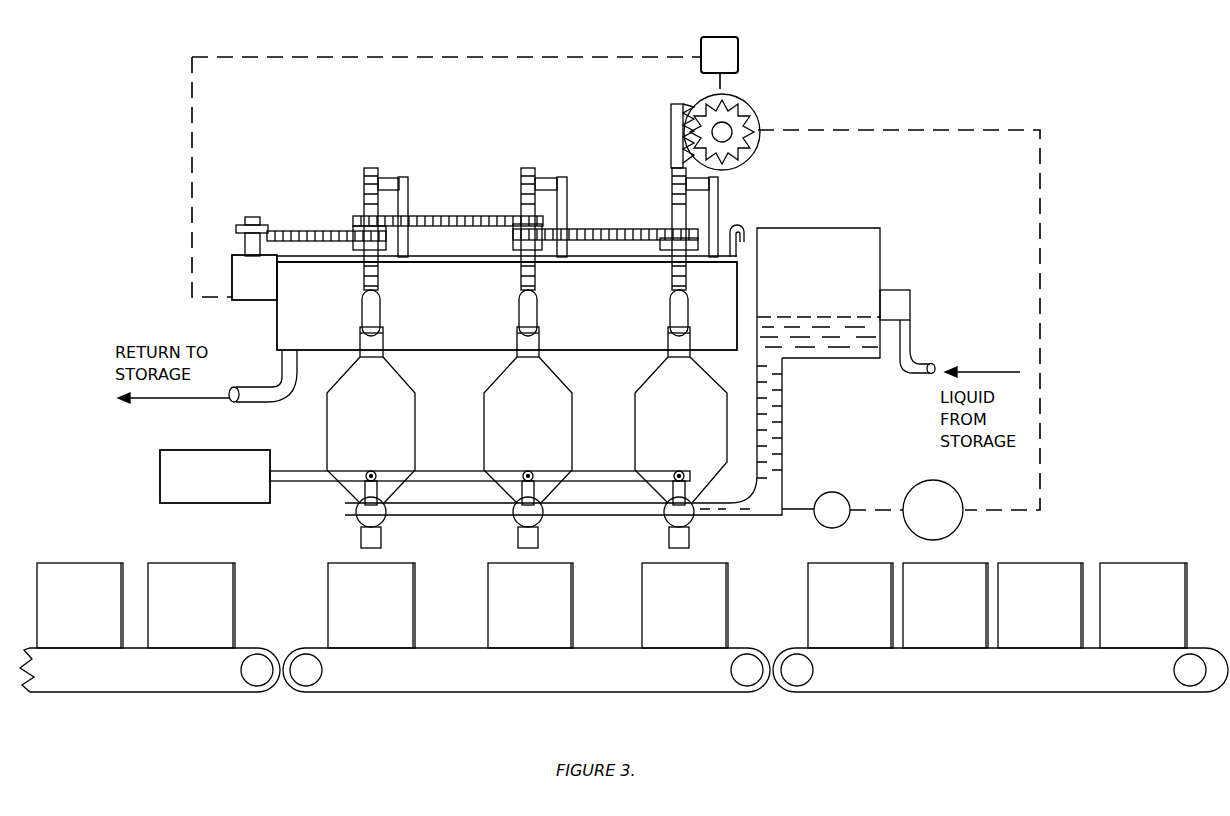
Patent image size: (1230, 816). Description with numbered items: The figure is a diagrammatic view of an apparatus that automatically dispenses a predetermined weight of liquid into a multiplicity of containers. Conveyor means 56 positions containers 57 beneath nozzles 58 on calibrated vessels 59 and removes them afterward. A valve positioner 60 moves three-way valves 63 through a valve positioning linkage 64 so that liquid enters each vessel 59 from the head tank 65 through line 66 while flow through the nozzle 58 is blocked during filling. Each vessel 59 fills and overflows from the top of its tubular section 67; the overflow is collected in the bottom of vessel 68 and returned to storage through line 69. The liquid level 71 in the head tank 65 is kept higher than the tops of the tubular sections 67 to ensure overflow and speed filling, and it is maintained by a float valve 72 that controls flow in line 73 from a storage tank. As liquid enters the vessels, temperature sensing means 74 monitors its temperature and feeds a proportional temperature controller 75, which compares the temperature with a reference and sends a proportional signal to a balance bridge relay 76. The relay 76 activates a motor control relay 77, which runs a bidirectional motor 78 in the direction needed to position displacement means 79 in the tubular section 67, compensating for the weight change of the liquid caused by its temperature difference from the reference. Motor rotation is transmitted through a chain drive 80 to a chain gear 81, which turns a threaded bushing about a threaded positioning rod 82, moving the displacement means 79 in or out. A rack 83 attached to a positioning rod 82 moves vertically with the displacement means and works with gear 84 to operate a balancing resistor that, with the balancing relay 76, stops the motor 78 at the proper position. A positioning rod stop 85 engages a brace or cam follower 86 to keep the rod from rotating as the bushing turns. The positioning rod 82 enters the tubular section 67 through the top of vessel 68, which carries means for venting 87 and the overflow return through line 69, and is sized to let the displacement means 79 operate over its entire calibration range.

The conveyor means 56 is at (200, 692).
The containers 57 is at (328, 592).
The nozzles 58 is at (378, 538).
The calibrated vessels 59 is at (413, 393).
The valve positioner 60 is at (232, 450).
The three-way valves 63 is at (357, 516).
The valve positioning linkage 64 is at (297, 472).
The head tank 65 is at (882, 270).
The line 66 is at (455, 512).
The tubular section 67 is at (384, 332).
The vessel 68 is at (277, 318).
The line 69 is at (263, 376).
The liquid level 71 is at (794, 316).
The float valve 72 is at (905, 306).
The line 73 is at (932, 368).
The temperature sensing means 74 is at (838, 506).
The proportional temperature controller 75 is at (948, 508).
The balance bridge relay 76 is at (760, 132).
The motor control relay 77 is at (738, 60).
The bidirectional motor 78 is at (238, 297).
The displacement means 79 is at (378, 312).
The chain drive 80 is at (296, 232).
The chain gear 81 is at (354, 230).
The positioning rod 82 is at (364, 172).
The rack 83 is at (680, 106).
The gear 84 is at (745, 117).
The positioning rod stop 85 is at (384, 184).
The brace or cam follower 86 is at (403, 206).
The means for venting 87 is at (745, 230).